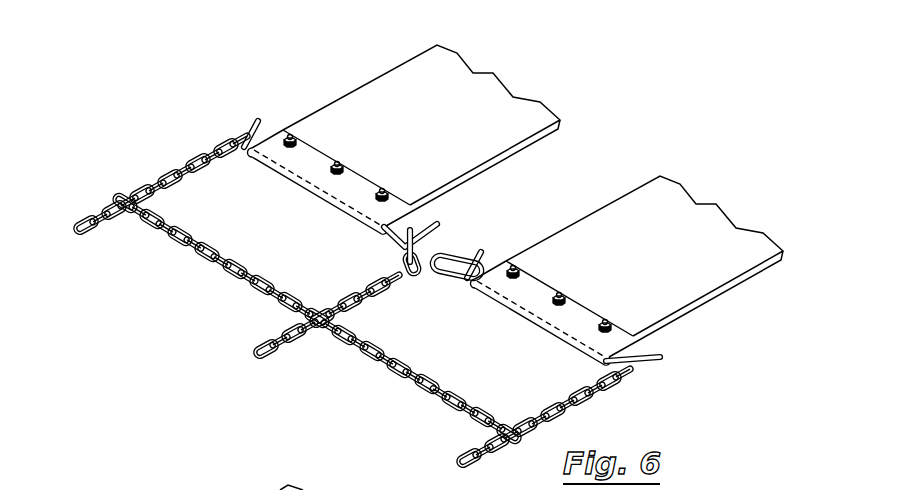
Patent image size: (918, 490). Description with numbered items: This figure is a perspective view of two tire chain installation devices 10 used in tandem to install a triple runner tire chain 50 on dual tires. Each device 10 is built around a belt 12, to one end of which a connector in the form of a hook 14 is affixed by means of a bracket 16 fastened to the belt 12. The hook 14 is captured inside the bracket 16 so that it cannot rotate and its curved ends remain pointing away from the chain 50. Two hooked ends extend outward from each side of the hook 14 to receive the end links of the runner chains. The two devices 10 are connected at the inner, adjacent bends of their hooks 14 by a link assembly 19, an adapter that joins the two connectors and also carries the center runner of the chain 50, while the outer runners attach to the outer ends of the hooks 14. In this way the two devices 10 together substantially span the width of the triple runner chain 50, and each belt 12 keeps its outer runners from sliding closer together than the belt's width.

The tire chain installation device 10 is at (499, 263).
The belt 12 is at (375, 95).
The hook 14 is at (253, 121).
The bracket 16 is at (340, 207).
The link assembly 19 is at (443, 281).
The tire chain 50 is at (188, 156).